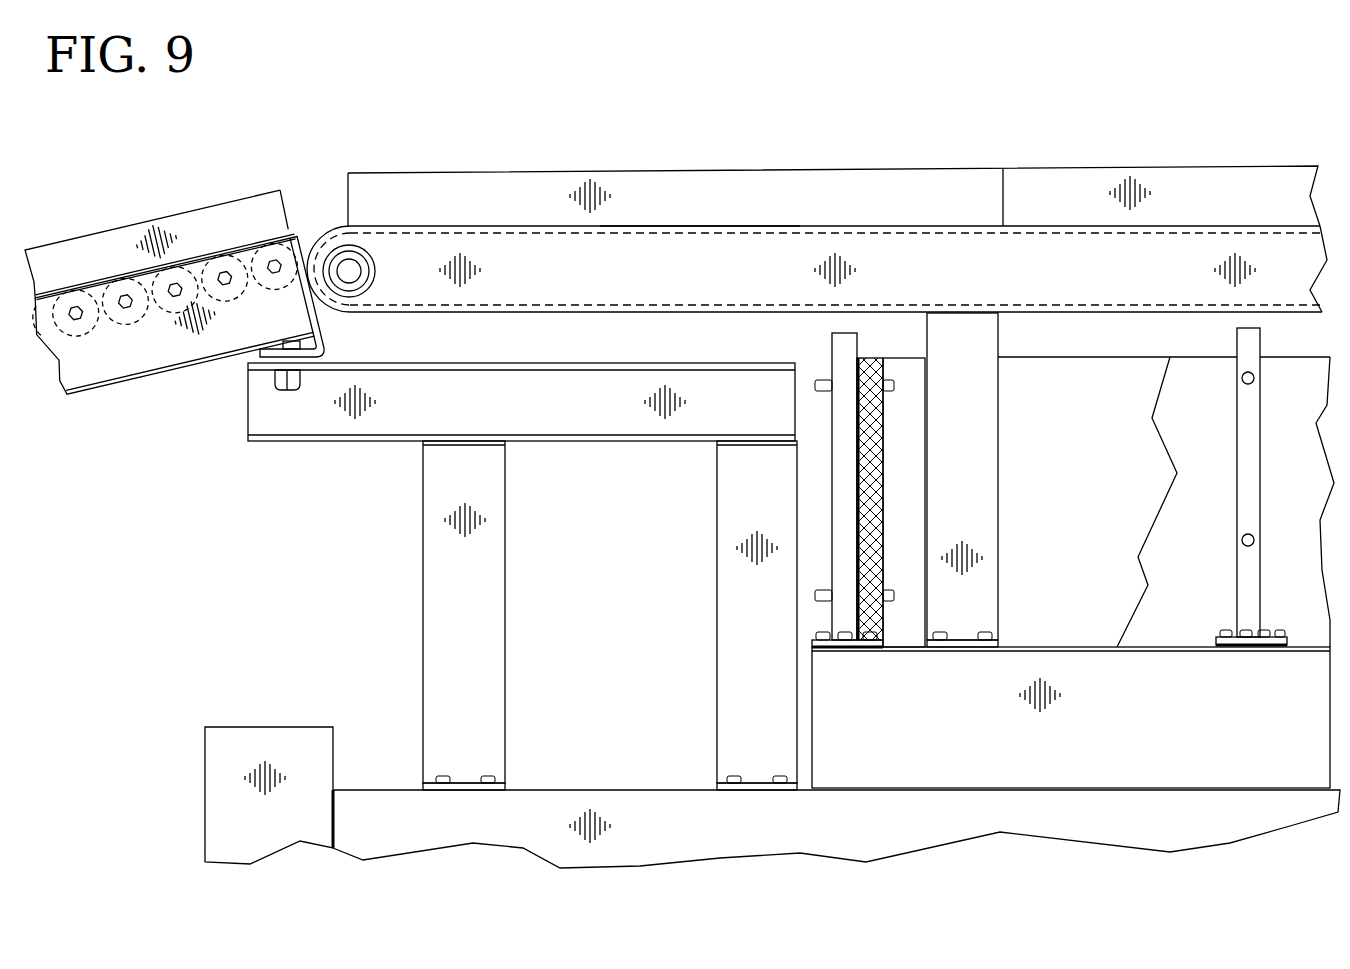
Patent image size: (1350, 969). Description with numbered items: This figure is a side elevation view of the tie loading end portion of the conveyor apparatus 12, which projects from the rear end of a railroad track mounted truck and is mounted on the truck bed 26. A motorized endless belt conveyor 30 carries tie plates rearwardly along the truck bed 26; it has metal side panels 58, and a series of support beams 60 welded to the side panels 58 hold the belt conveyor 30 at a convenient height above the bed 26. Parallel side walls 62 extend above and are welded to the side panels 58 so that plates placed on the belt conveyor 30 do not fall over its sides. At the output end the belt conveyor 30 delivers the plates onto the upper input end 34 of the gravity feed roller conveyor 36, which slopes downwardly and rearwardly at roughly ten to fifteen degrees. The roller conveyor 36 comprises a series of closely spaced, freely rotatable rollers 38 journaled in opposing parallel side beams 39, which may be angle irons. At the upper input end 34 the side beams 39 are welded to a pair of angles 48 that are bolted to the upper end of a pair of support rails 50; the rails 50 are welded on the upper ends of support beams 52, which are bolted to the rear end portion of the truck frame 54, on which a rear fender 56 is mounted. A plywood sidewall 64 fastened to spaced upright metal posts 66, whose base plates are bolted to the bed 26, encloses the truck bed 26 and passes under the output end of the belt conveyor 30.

The conveyor apparatus 12 is at (348, 104).
The truck bed 26 is at (1048, 647).
The belt conveyor 30 is at (508, 218).
The upper input end 34 is at (291, 230).
The roller conveyor 36 is at (153, 206).
The rollers 38 is at (128, 338).
The side beams 39 is at (97, 375).
The angles 48 is at (322, 333).
The support rails 50 is at (545, 415).
The support beams 52 is at (488, 598).
The frame 54 is at (580, 790).
The rear fender 56 is at (327, 748).
The side panels 58 is at (693, 245).
The support beams 60 is at (955, 628).
The side walls 62 is at (893, 178).
The plywood sidewall 64 is at (871, 358).
The upright metal posts 66 is at (845, 333).